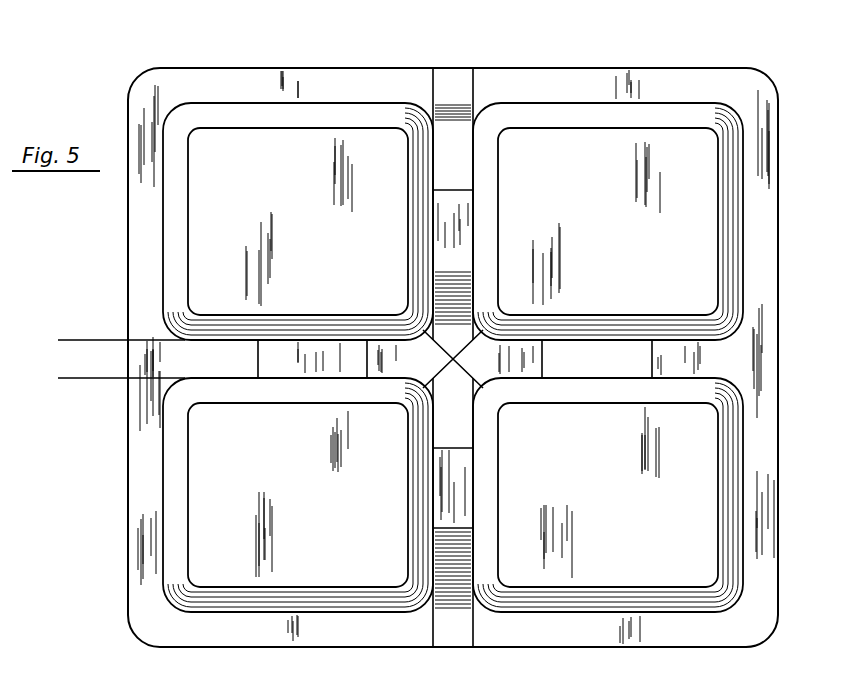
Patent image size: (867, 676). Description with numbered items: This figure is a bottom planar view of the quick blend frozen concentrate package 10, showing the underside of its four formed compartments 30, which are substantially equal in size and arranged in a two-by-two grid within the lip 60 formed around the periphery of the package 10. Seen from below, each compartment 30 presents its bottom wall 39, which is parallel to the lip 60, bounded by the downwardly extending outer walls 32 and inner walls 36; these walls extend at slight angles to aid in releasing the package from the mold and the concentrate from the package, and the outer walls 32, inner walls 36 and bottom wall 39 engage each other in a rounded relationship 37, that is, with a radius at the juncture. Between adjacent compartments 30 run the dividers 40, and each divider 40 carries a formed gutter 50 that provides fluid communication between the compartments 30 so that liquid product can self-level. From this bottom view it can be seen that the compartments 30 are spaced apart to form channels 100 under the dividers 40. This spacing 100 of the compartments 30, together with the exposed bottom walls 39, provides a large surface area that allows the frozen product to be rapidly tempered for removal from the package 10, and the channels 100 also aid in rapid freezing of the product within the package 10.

The quick blend frozen concentrate package 10 is at (396, 326).
The compartment 30 is at (556, 116).
The outer wall 32 is at (252, 115).
The inner wall 36 is at (598, 388).
The rounded relationship 37 is at (170, 594).
The bottom wall 39 is at (300, 193).
The divider 40 is at (614, 336).
The gutter 50 is at (460, 233).
The lip 60 is at (195, 88).
The channel 100 is at (516, 85).